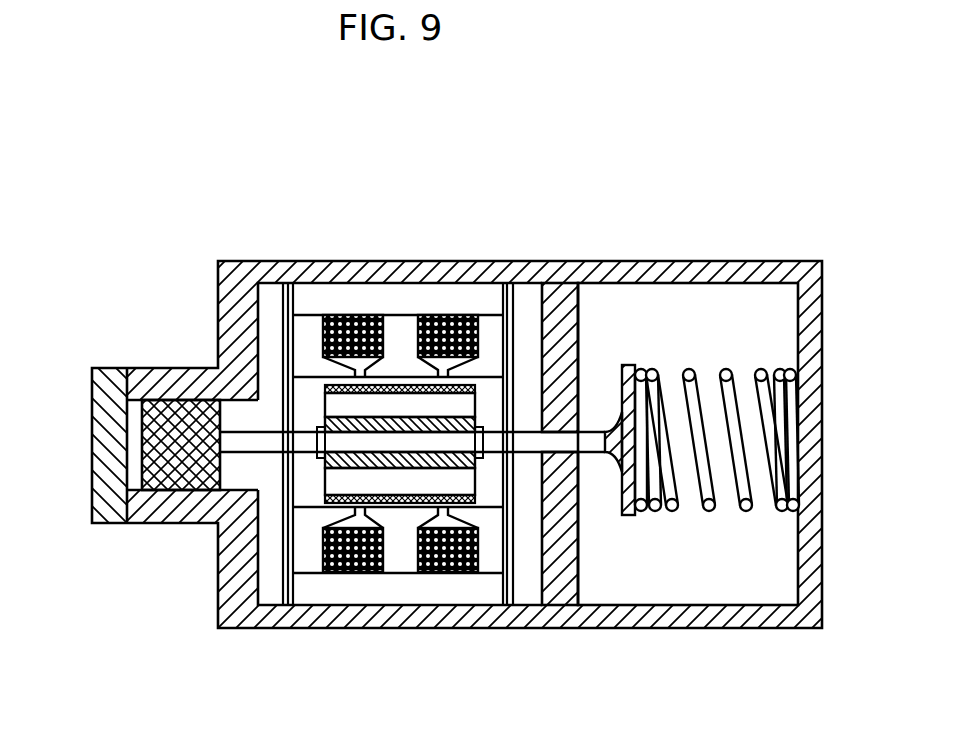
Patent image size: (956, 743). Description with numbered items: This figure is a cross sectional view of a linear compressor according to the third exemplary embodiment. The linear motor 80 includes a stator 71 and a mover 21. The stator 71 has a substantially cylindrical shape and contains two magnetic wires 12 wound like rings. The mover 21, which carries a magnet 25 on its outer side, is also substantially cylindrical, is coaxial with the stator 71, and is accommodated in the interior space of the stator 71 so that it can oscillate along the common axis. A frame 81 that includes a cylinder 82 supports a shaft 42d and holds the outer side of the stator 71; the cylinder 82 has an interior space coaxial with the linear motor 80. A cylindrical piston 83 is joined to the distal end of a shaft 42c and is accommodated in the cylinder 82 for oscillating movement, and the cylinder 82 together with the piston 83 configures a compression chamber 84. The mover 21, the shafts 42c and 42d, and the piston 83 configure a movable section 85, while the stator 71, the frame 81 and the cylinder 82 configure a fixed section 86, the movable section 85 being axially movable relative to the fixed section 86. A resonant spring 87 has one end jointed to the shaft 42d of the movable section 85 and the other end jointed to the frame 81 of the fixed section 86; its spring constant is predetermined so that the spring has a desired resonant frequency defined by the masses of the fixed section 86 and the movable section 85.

The frame 81 is at (233, 278).
The cylinder 82 is at (162, 385).
The piston 83 is at (177, 470).
The compression chamber 84 is at (133, 475).
The shaft 42c is at (280, 437).
The shaft 42d is at (592, 420).
The stator 71 is at (435, 298).
The linear motor 80 is at (402, 588).
The magnetic wire 12 is at (345, 325).
The magnet 25 is at (466, 500).
The mover 21 is at (405, 400).
The movable section 85 is at (340, 483).
The fixed section 86 is at (557, 282).
The resonant spring 87 is at (688, 373).